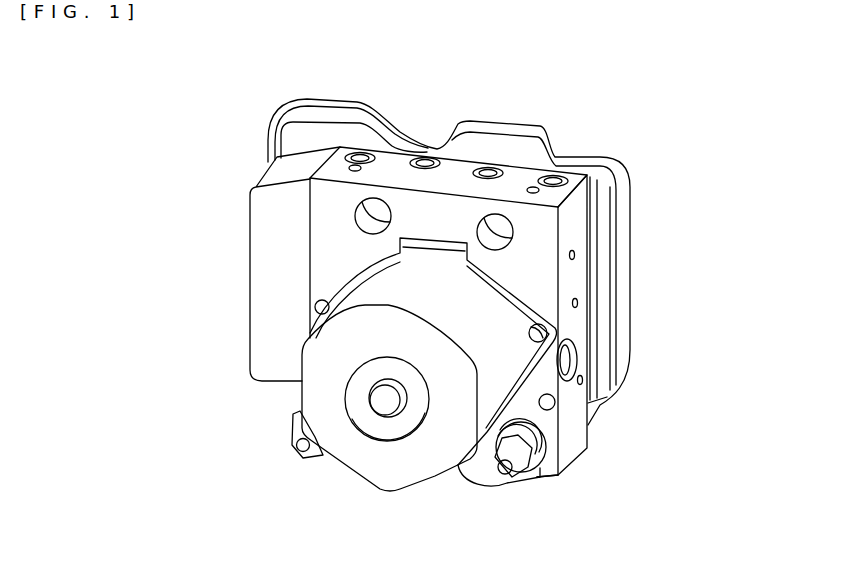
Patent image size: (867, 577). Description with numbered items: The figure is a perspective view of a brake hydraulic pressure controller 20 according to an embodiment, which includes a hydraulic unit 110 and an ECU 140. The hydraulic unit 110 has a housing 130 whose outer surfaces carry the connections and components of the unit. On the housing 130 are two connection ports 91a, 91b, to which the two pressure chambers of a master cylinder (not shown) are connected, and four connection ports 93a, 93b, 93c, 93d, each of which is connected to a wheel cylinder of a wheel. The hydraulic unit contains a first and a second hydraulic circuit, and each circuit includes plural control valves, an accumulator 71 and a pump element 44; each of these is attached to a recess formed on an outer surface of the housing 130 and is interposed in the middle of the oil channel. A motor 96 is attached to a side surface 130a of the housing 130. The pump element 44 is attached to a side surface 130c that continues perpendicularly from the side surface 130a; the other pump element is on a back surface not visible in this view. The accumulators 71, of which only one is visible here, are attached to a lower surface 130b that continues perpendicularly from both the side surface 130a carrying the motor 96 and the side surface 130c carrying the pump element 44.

The brake hydraulic pressure controller 20 is at (460, 306).
The pump element 44 is at (567, 360).
The accumulator 71 is at (483, 487).
The connection port 91a is at (365, 221).
The connection port 91b is at (505, 232).
The connection port 93a is at (359, 156).
The connection port 93b is at (426, 160).
The connection port 93c is at (490, 170).
The connection port 93d is at (555, 178).
The motor 96 is at (303, 405).
The hydraulic unit 110 is at (446, 306).
The housing 130 is at (446, 305).
The side surface 130a is at (530, 285).
The lower surface 130b is at (550, 477).
The side surface 130c is at (578, 325).
The ECU 140 is at (537, 132).